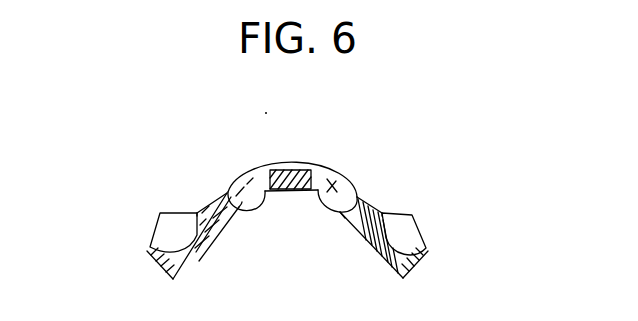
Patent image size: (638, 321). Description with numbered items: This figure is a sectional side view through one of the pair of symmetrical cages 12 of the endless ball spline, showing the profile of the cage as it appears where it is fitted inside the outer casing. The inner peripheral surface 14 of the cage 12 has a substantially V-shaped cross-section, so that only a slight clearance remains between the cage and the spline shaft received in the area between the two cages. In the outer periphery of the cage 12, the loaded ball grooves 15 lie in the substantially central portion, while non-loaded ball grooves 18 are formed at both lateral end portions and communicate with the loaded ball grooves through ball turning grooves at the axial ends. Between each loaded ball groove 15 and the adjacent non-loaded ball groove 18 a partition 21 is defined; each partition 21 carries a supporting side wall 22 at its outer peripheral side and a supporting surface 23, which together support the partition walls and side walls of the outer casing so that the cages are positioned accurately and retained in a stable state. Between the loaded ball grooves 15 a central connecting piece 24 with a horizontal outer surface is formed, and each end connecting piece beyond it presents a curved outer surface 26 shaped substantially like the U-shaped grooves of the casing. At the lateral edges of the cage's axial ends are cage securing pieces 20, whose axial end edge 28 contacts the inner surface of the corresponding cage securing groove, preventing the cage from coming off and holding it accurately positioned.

The cage 12 is at (388, 268).
The inner peripheral surface 14 is at (215, 240).
The loaded ball groove 15 is at (258, 168).
The non-loaded ball groove 18 is at (167, 221).
The cage securing piece 20 is at (160, 264).
The partition 21 is at (240, 209).
The supporting side wall 22 is at (196, 212).
The supporting surface 23 is at (220, 197).
The central connecting piece 24 is at (300, 166).
The curved outer surface 26 is at (286, 164).
The axial end edge 28 is at (150, 245).